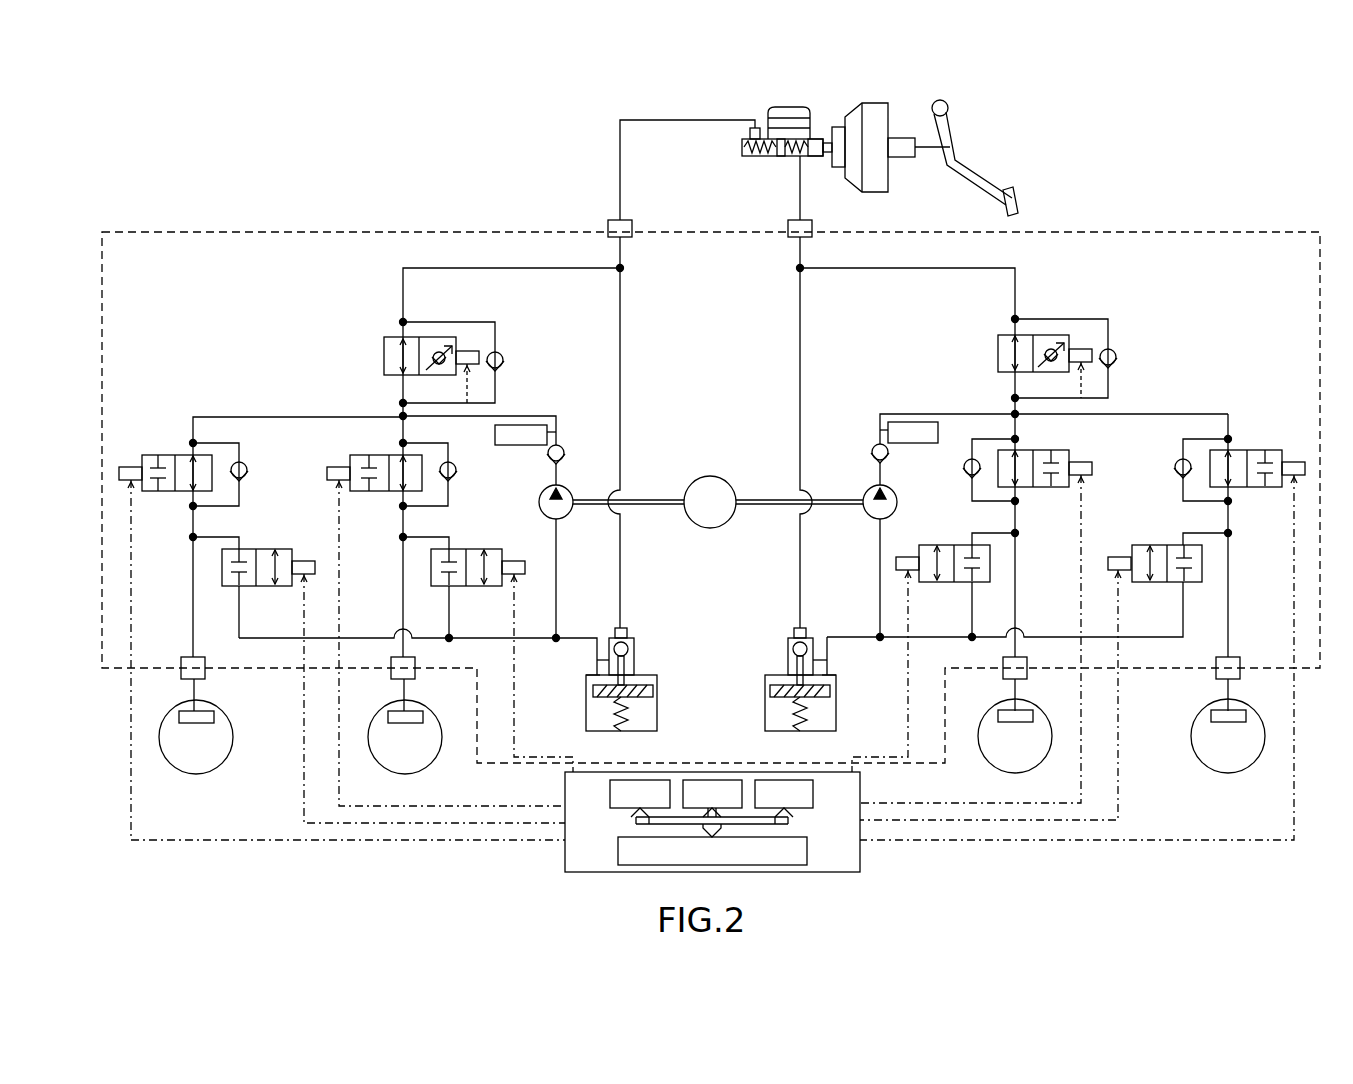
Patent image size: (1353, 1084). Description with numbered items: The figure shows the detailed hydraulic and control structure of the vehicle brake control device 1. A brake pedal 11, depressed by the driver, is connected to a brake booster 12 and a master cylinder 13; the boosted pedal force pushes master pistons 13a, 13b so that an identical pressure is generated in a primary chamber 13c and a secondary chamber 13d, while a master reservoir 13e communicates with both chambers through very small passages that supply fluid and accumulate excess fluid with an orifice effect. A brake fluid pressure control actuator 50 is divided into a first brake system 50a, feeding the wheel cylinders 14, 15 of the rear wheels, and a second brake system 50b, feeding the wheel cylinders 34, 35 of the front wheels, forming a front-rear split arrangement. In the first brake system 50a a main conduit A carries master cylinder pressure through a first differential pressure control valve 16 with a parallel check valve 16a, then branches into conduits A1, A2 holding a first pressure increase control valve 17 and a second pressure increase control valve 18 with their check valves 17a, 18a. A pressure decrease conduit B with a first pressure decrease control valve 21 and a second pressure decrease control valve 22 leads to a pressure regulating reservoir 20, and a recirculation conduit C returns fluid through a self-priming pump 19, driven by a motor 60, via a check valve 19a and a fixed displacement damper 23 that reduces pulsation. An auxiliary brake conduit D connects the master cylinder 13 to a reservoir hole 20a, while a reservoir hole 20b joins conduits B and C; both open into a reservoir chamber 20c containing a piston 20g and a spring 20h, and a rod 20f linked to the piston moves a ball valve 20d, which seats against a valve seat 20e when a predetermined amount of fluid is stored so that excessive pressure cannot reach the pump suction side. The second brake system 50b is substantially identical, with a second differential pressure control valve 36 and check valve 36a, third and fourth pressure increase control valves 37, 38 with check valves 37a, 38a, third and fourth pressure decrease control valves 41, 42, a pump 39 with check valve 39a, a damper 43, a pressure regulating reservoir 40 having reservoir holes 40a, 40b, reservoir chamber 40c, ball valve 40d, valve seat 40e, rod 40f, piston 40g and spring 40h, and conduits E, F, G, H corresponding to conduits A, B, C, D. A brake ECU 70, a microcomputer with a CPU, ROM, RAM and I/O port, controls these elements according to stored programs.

The vehicle brake control device 1 is at (1090, 92).
The brake pedal 11 is at (962, 128).
The brake booster 12 is at (872, 103).
The master cylinder 13 is at (768, 148).
The master piston 13a is at (780, 156).
The master piston 13b is at (815, 158).
The primary chamber 13c is at (757, 156).
The secondary chamber 13d is at (800, 156).
The master reservoir 13e is at (789, 107).
The wheel cylinder 14 is at (178, 716).
The wheel cylinder 15 is at (388, 716).
The first differential pressure control valve 16 is at (384, 356).
The check valve 16a is at (491, 352).
The first pressure increase control valve 17 is at (175, 455).
The check valve 17a is at (248, 465).
The second pressure increase control valve 18 is at (382, 455).
The check valve 18a is at (457, 472).
The self-priming pump 19 is at (539, 502).
The check valve 19a is at (562, 447).
The pressure regulating reservoir 20 is at (609, 669).
The reservoir hole 20a is at (621, 628).
The reservoir hole 20b is at (590, 658).
The reservoir chamber 20c is at (586, 680).
The ball valve 20d is at (634, 645).
The valve seat 20e is at (629, 650).
The rod 20f is at (625, 672).
The piston 20g is at (653, 692).
The spring 20h is at (627, 726).
The first pressure decrease control valve 21 is at (248, 549).
The second pressure decrease control valve 22 is at (470, 549).
The fixed displacement damper 23 is at (545, 425).
The wheel cylinder 34 is at (1247, 716).
The wheel cylinder 35 is at (1034, 716).
The second differential pressure control valve 36 is at (998, 353).
The check valve 36a is at (1104, 349).
The third pressure increase control valve 37 is at (1238, 450).
The check valve 37a is at (1176, 462).
The fourth pressure increase control valve 38 is at (1040, 450).
The check valve 38a is at (962, 470).
The pump 39 is at (897, 502).
The check valve 39a is at (870, 450).
The pressure regulating reservoir 40 is at (808, 669).
The reservoir hole 40a is at (800, 628).
The reservoir hole 40b is at (836, 658).
The reservoir chamber 40c is at (836, 680).
The ball valve 40d is at (788, 645).
The valve seat 40e is at (792, 650).
The rod 40f is at (796, 672).
The piston 40g is at (770, 692).
The spring 40h is at (795, 726).
The third pressure decrease control valve 41 is at (1170, 545).
The fourth pressure decrease control valve 42 is at (952, 545).
The damper 43 is at (888, 422).
The brake fluid pressure control actuator 50 is at (440, 232).
The first brake system 50a is at (275, 338).
The second brake system 50b is at (1170, 338).
The motor 60 is at (704, 477).
The brake ECU 70 is at (860, 868).
The conduit A is at (425, 268).
The conduit A1 is at (193, 604).
The conduit A2 is at (403, 590).
The conduit B is at (518, 638).
The conduit C is at (515, 417).
The brake conduit D is at (622, 345).
The conduit E is at (990, 268).
The conduit F is at (945, 638).
The conduit G is at (908, 414).
The conduit H is at (798, 345).